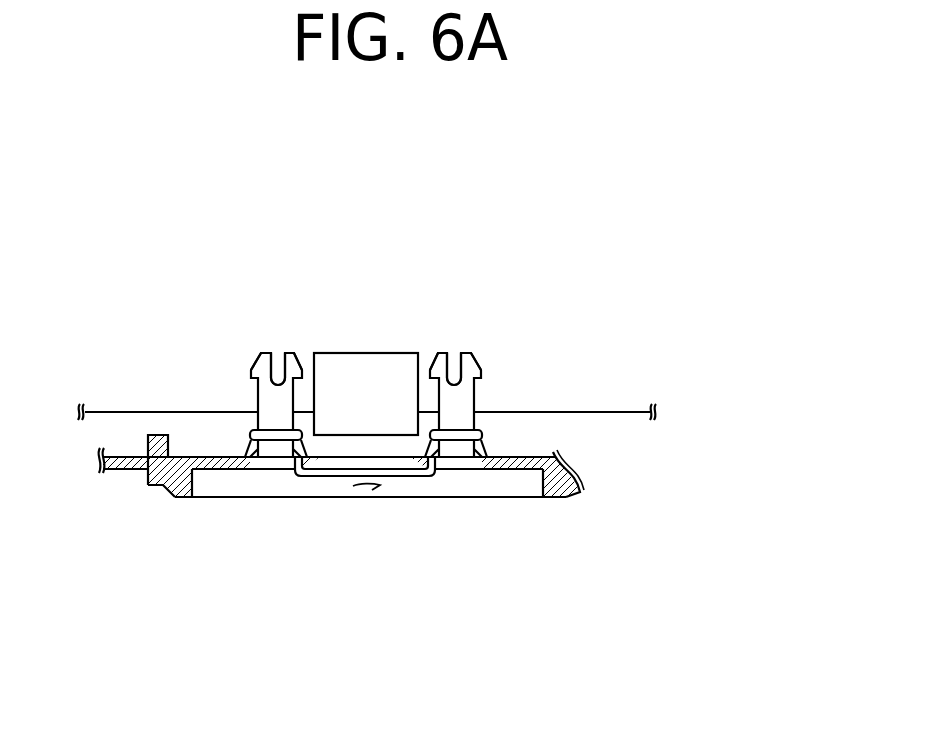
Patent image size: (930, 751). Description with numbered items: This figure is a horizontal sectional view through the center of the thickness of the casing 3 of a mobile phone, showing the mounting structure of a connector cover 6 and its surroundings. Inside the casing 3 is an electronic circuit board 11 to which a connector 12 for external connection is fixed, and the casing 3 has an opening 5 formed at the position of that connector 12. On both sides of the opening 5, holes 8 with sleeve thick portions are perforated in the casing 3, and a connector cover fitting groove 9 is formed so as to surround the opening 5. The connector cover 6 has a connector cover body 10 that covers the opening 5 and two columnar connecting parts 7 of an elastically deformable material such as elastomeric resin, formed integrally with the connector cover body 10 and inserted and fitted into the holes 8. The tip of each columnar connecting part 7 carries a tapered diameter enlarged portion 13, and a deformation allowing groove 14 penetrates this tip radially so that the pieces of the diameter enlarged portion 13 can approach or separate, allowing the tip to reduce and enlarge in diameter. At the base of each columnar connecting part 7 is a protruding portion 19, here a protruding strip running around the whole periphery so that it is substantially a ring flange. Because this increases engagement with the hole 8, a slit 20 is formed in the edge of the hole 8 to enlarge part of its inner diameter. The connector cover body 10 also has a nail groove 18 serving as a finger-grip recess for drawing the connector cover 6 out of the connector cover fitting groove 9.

The casing 3 is at (122, 470).
The opening 5 is at (357, 463).
The connector cover 6 is at (383, 537).
The columnar connecting part 7 is at (364, 430).
The hole 8 is at (256, 458).
The connector cover fitting groove 9 is at (534, 486).
The connector cover body 10 is at (328, 484).
The electronic circuit board 11 is at (100, 412).
The connector 12 is at (365, 370).
The diameter enlarged portion 13 is at (366, 340).
The deformation allowing groove 14 is at (260, 358).
The nail groove 18 is at (373, 488).
The protruding portion 19 is at (280, 437).
The slit 20 is at (291, 441).